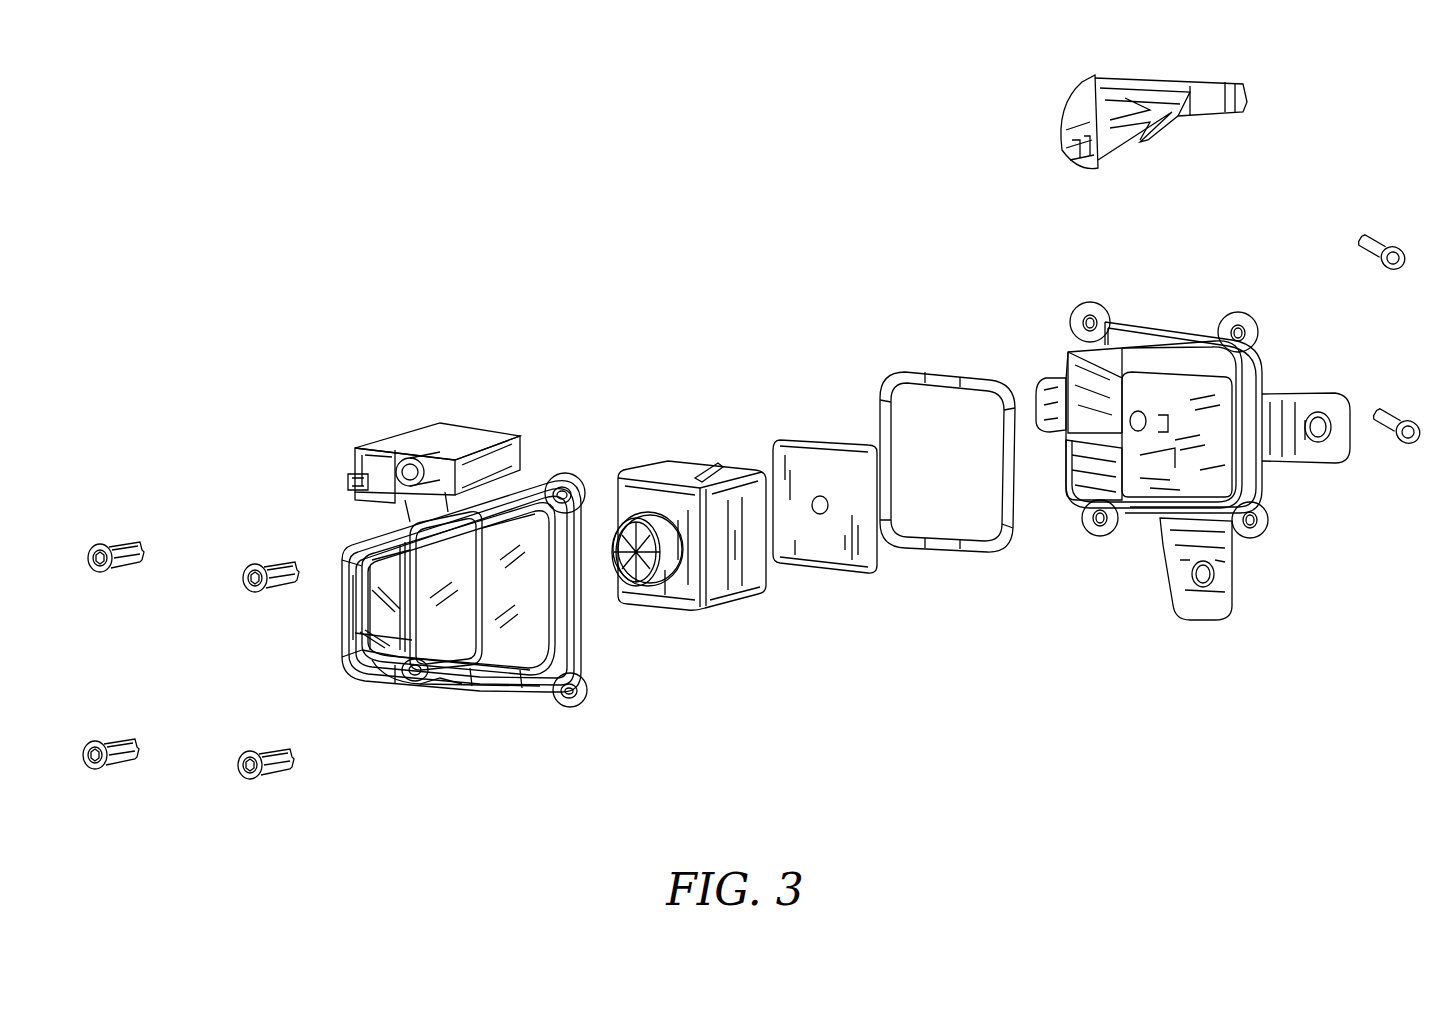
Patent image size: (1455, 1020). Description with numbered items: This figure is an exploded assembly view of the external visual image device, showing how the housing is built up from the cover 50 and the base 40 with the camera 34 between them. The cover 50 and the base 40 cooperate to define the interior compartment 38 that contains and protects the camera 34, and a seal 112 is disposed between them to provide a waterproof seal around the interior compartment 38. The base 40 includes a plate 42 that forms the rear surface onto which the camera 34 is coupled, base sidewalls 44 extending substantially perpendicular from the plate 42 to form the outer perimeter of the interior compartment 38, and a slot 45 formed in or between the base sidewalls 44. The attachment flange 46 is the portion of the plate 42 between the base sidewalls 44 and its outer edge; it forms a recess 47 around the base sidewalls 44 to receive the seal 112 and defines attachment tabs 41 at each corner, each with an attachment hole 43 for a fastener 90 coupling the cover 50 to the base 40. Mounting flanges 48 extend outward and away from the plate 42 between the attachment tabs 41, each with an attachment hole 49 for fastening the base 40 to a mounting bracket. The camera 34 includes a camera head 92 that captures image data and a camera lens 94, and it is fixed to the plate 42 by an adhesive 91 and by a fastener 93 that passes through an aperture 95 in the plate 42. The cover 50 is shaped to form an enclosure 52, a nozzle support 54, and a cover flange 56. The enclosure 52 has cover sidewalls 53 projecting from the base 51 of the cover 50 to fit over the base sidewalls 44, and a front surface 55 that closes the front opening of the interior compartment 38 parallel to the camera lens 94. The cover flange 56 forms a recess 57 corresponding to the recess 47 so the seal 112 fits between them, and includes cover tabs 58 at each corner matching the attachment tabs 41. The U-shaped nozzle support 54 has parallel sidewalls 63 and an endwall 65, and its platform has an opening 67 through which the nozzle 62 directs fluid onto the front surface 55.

The camera 34 is at (683, 334).
The interior compartment 38 is at (1120, 390).
The base 40 is at (1258, 222).
The attachment tabs 41 is at (1110, 320).
The plate 42 is at (1147, 460).
The attachment hole 43 is at (1085, 312).
The base sidewalls 44 is at (1205, 398).
The slot 45 is at (1170, 350).
The attachment flange 46 is at (1150, 350).
The recess 47 is at (1262, 495).
The mounting flanges 48 is at (1045, 400).
The attachment hole 49 is at (1328, 425).
The cover 50 is at (468, 255).
The base of the cover 51 is at (540, 475).
The enclosure 52 is at (440, 715).
The cover sidewalls 53 is at (435, 505).
The nozzle support 54 is at (383, 435).
The front surface 55 is at (388, 655).
The cover flange 56 is at (578, 620).
The recess 57 is at (535, 690).
The cover tabs 58 is at (585, 470).
The nozzle 62 is at (848, 103).
The parallel sidewalls 63 is at (455, 455).
The endwall 65 is at (352, 462).
The opening 67 is at (350, 480).
The fasteners 90 is at (135, 338).
The adhesive 91 is at (867, 580).
The camera head 92 is at (705, 478).
The fastener 93 is at (1380, 250).
The camera lens 94 is at (645, 560).
The aperture 95 is at (1128, 430).
The seal 112 is at (983, 565).